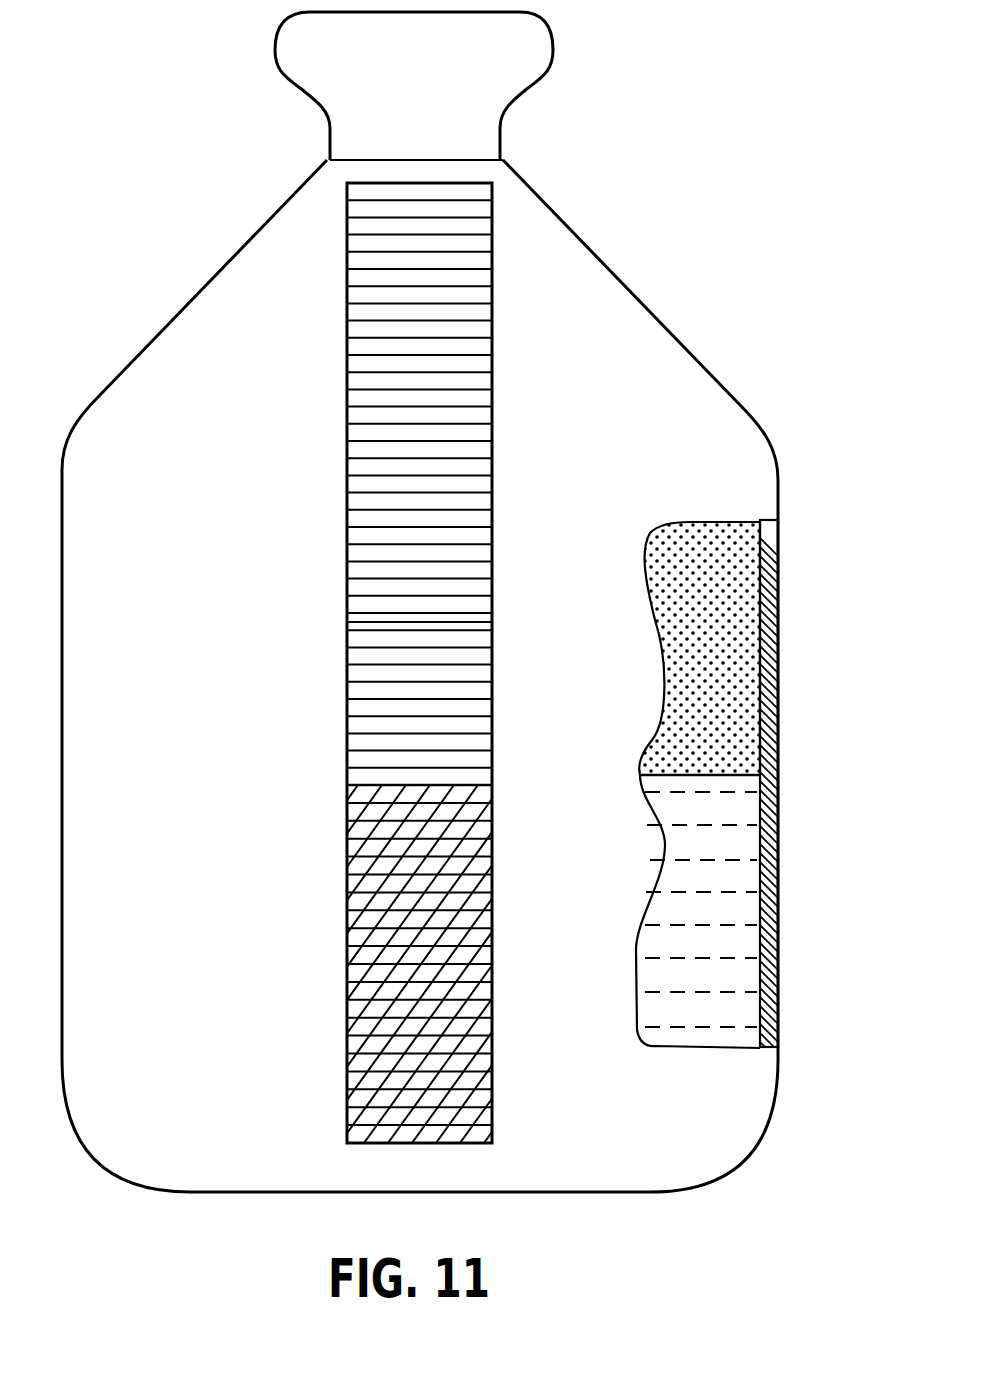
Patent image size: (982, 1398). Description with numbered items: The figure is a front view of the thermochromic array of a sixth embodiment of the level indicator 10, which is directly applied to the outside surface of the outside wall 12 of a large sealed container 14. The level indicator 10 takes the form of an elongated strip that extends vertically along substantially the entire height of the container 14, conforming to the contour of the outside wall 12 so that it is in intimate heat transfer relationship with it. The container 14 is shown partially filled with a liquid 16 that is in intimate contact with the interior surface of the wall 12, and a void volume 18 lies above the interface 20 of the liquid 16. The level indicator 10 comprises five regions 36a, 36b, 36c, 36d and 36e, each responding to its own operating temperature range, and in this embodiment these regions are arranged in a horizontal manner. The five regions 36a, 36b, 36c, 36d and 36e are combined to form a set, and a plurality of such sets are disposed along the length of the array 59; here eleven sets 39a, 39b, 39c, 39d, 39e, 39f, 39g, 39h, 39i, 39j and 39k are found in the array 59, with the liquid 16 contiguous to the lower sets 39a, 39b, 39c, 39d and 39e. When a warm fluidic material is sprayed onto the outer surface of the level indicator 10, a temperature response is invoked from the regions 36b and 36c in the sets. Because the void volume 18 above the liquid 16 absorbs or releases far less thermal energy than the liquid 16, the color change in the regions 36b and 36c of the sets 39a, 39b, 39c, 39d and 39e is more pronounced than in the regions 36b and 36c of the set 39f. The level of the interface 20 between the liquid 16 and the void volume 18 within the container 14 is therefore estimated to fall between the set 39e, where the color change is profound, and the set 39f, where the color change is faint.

The level indicator 10 is at (345, 243).
The outside wall 12 is at (777, 934).
The container 14 is at (643, 298).
The liquid 16 is at (720, 850).
The void volume 18 is at (737, 576).
The interface 20 is at (728, 775).
The array 59 is at (284, 403).
The region 36a is at (358, 622).
The region 36b is at (358, 640).
The region 36c is at (358, 657).
The region 36d is at (358, 677).
The region 36e is at (360, 693).
The set 39a is at (587, 1158).
The set 39b is at (345, 965).
The set 39c is at (503, 878).
The set 39d is at (345, 790).
The set 39e is at (587, 803).
The set 39f is at (226, 588).
The set 39g is at (503, 532).
The set 39h is at (345, 445).
The set 39i is at (503, 358).
The set 39j is at (345, 272).
The set 39k is at (503, 184).